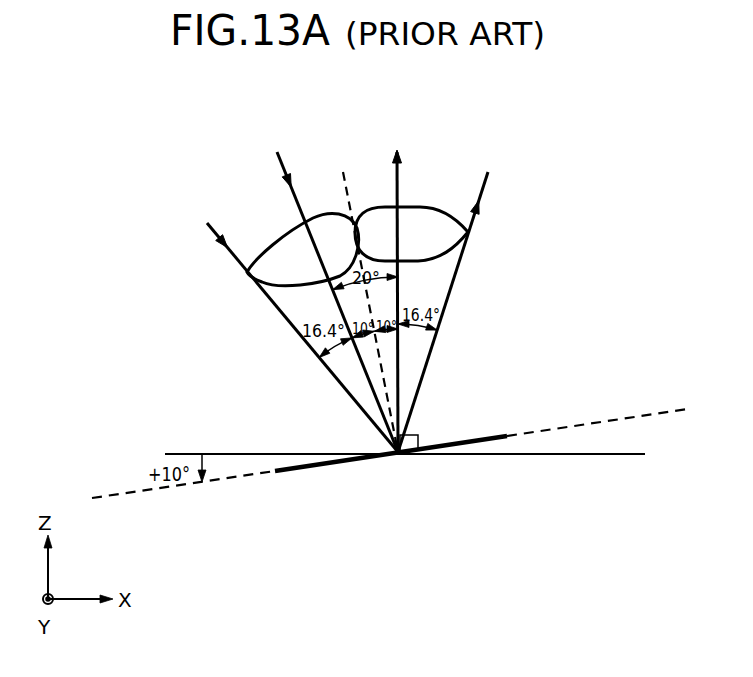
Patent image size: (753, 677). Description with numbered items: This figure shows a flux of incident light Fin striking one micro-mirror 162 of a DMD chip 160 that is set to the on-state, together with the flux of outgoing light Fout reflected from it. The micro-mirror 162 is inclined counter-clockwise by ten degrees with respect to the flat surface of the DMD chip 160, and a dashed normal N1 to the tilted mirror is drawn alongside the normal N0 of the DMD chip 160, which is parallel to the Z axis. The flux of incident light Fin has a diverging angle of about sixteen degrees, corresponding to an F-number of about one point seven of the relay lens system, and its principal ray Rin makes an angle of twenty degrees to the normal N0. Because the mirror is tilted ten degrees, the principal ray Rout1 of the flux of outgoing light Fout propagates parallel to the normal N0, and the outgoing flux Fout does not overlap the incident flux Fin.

The DMD chip 160 is at (582, 455).
The micro-mirror 162 is at (335, 463).
The principal ray of the flux of incident light Rin is at (283, 163).
The principal ray of the flux of outgoing light Rout1 is at (400, 172).
The normal of the DMD chip N0 is at (395, 289).
The normal to inclined surface N1 is at (364, 302).
The flux of incident light Fin is at (268, 252).
The flux of outgoing light Fout is at (437, 216).